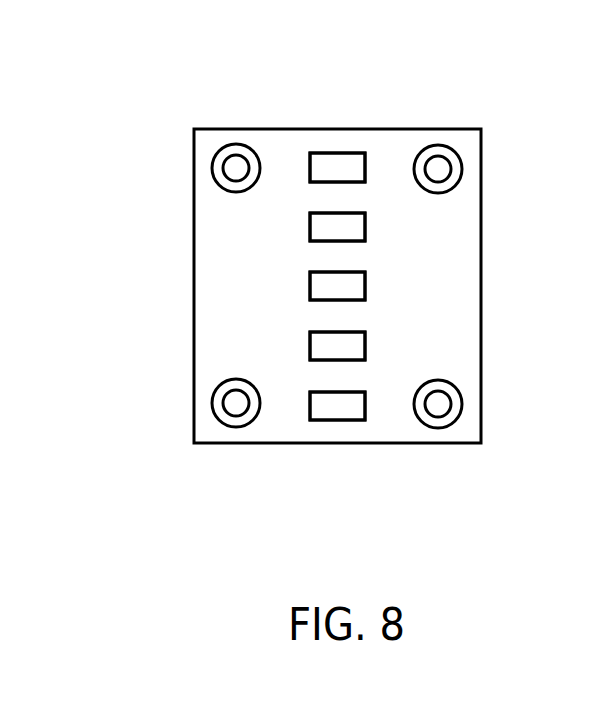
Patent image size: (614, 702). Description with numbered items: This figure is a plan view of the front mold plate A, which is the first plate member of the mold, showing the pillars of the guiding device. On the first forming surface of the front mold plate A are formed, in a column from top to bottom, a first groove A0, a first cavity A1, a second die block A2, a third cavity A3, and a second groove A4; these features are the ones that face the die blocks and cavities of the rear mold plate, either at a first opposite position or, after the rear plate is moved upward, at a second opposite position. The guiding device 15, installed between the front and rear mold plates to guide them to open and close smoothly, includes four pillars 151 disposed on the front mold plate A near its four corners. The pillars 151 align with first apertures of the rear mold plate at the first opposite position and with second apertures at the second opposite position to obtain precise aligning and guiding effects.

The front mold plate A is at (194, 278).
The guiding device 15 is at (263, 160).
The pillars 151 is at (236, 168).
The first groove A0 is at (338, 153).
The first cavity A1 is at (365, 232).
The second die block A2 is at (365, 290).
The third cavity A3 is at (365, 350).
The second groove A4 is at (341, 420).